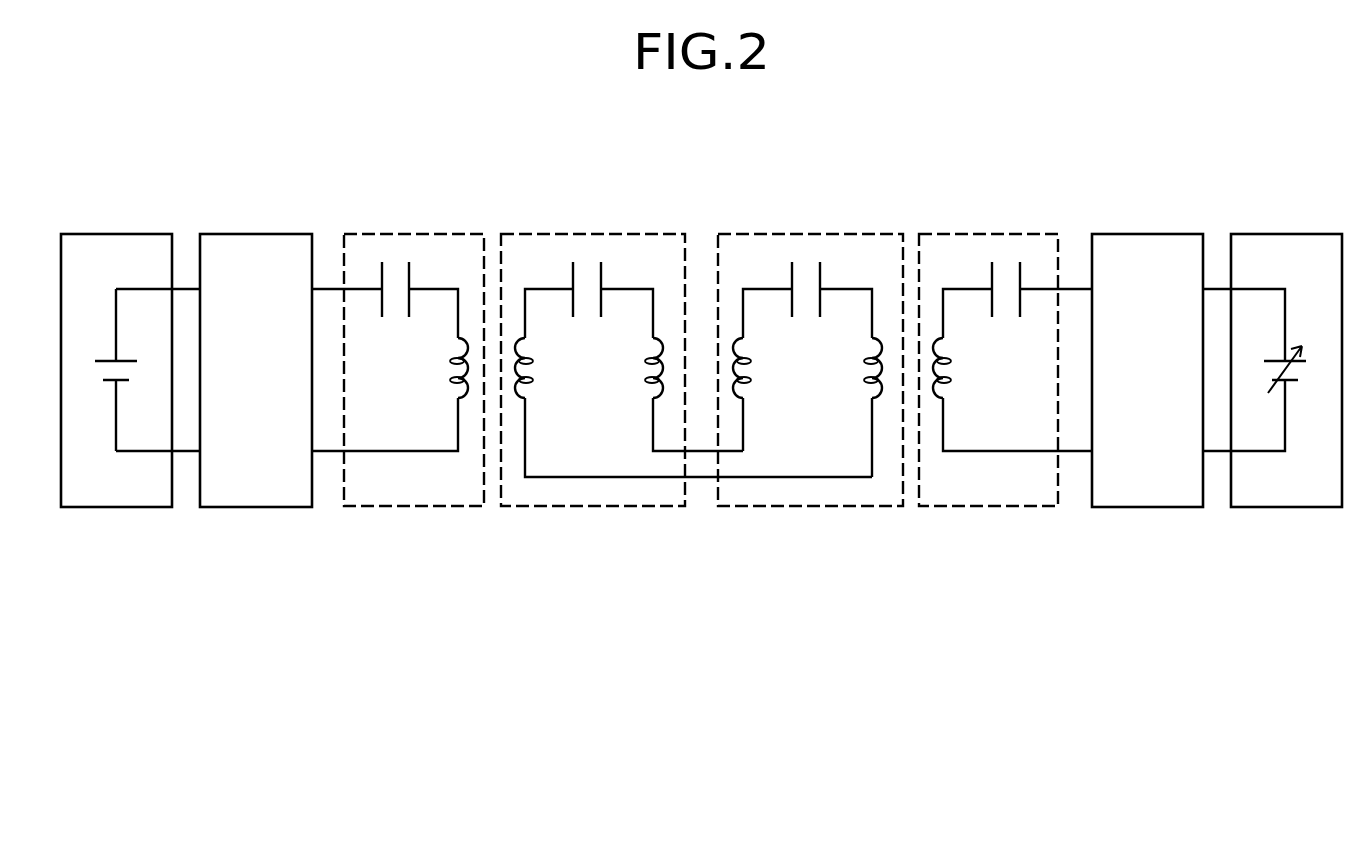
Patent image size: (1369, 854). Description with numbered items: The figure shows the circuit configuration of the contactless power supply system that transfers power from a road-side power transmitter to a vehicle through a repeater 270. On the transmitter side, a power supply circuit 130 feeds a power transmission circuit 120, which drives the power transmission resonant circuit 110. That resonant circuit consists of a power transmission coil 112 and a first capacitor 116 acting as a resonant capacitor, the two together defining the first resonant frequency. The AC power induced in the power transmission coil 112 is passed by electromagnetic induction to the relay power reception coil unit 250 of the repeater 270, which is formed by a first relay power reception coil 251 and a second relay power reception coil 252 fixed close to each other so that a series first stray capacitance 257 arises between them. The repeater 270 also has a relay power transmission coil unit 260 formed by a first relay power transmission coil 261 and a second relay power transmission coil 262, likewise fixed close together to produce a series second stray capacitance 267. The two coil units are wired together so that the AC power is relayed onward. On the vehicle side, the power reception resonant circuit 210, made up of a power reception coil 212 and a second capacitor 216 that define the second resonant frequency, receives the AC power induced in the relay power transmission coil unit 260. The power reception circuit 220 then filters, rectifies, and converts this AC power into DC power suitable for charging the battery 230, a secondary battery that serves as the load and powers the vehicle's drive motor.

The power supply circuit 130 is at (116, 234).
The power transmission circuit 120 is at (256, 234).
The power transmission resonant circuit 110 is at (398, 336).
The first capacitor 116 is at (381, 303).
The power transmission coil 112 is at (465, 392).
The repeater 270 is at (758, 163).
The relay power reception coil unit 250 is at (686, 336).
The first stray capacitance 257 is at (571, 303).
The first relay power reception coil 251 is at (519, 392).
The second relay power reception coil 252 is at (660, 392).
The relay power transmission coil unit 260 is at (810, 336).
The second stray capacitance 267 is at (790, 303).
The second relay power transmission coil 262 is at (737, 392).
The first relay power transmission coil 261 is at (880, 392).
The power reception resonant circuit 210 is at (1005, 336).
The second capacitor 216 is at (991, 303).
The power reception coil 212 is at (937, 392).
The power reception circuit 220 is at (1147, 234).
The battery 230 is at (1287, 234).